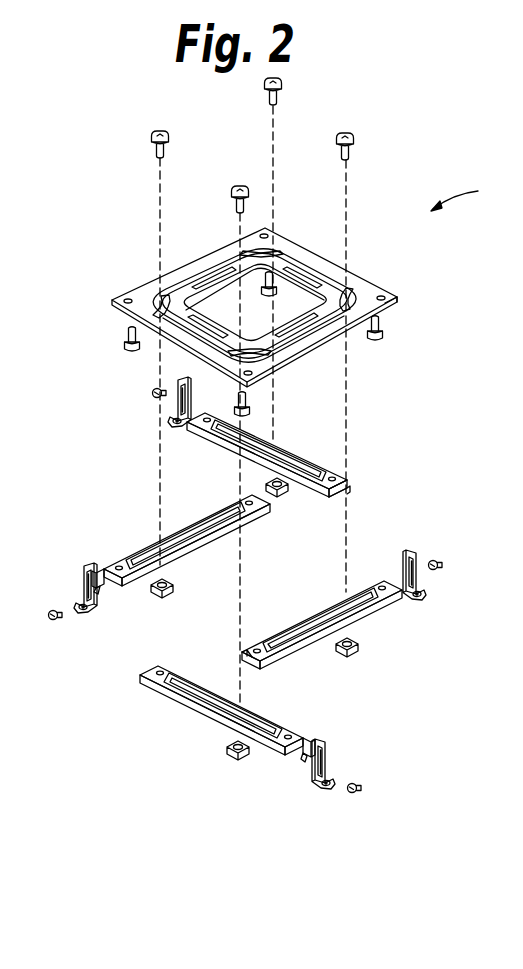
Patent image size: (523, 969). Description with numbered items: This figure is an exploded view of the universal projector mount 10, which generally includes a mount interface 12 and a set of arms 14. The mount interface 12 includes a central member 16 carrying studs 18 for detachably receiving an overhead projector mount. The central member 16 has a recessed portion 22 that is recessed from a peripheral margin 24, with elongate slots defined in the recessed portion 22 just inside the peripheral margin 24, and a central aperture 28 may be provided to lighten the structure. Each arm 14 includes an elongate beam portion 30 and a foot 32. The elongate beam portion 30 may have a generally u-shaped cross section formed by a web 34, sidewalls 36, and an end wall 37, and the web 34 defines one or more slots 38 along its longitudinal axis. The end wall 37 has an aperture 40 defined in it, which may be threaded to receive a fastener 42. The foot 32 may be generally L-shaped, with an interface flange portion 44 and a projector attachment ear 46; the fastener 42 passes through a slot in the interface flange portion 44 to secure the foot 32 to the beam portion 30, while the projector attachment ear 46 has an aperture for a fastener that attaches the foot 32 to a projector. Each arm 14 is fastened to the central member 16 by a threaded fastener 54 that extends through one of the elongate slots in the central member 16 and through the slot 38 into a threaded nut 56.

The universal projector mount 10 is at (468, 195).
The mount interface 12 is at (267, 291).
The arm 14 is at (241, 597).
The central member 16 is at (398, 297).
The stud 18 is at (282, 292).
The recessed portion 22 is at (286, 252).
The peripheral margin 24 is at (300, 258).
The central aperture 28 is at (206, 298).
The elongate beam portion 30 is at (312, 497).
The foot 32 is at (259, 593).
The web 34 is at (350, 481).
The sidewall 36 is at (351, 491).
The end wall 37 is at (104, 586).
The slot 38 is at (300, 460).
The aperture 40 is at (106, 570).
The fastener 42 is at (151, 393).
The interface flange portion 44 is at (172, 422).
The projector attachment ear 46 is at (178, 388).
The threaded fastener 54 is at (350, 134).
The threaded nut 56 is at (279, 498).